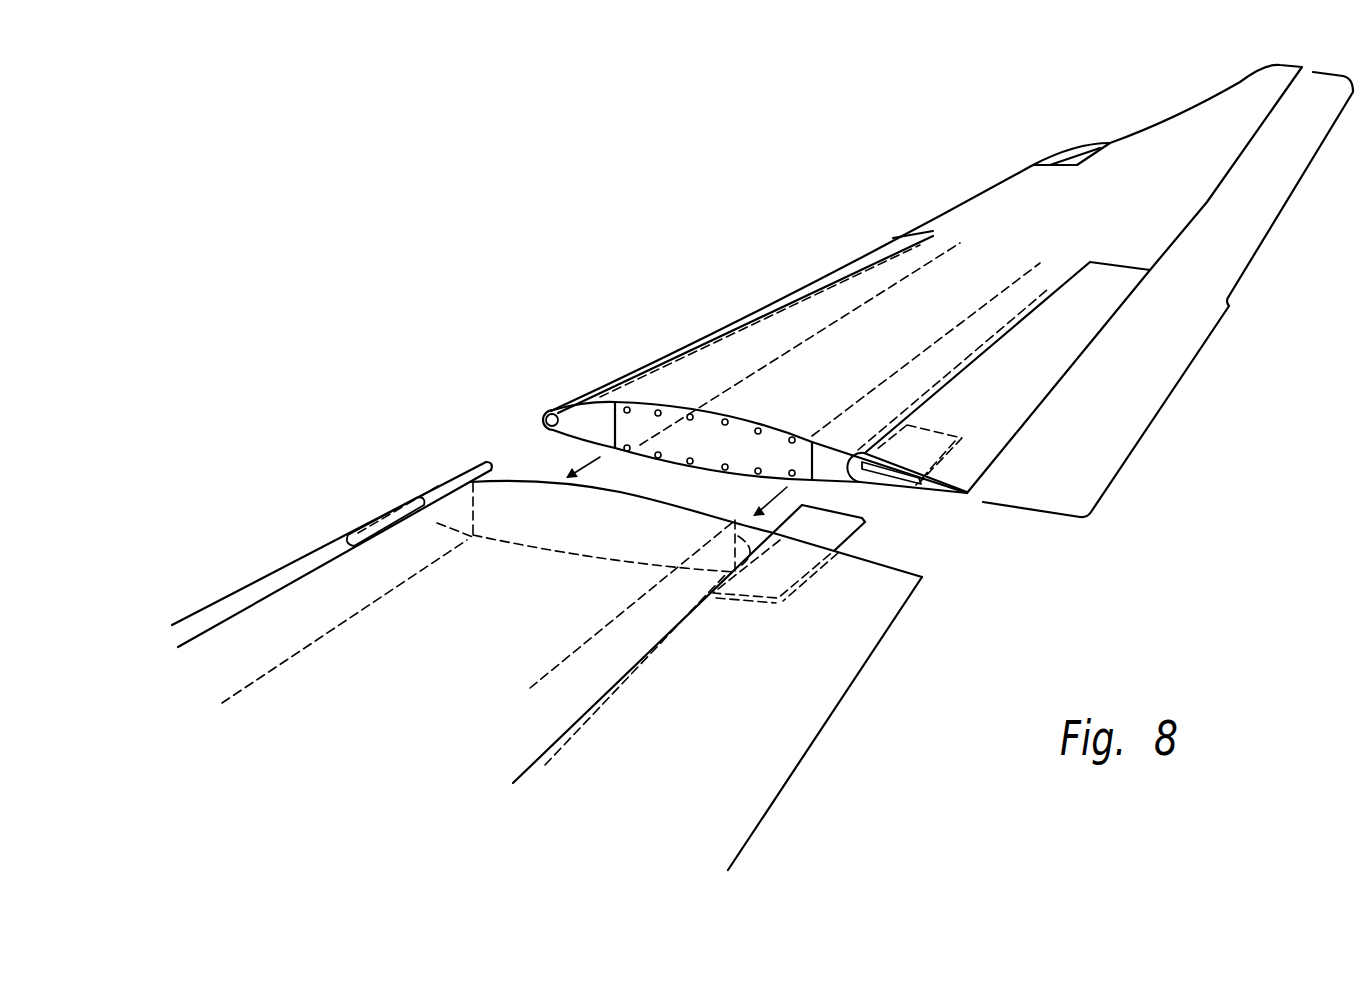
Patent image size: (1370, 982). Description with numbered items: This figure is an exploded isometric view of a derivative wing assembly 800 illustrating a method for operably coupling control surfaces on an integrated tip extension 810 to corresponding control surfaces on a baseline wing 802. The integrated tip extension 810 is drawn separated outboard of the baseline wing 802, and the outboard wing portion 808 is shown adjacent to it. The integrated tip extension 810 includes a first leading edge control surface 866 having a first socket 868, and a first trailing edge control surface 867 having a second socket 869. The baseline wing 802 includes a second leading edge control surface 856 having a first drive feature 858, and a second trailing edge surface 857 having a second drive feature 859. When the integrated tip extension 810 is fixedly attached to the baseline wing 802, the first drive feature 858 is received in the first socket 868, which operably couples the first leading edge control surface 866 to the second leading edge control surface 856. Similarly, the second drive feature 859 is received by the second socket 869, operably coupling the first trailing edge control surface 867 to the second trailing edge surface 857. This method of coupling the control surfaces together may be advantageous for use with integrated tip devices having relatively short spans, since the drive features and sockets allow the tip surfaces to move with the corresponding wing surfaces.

The derivative wing assembly 800 is at (397, 208).
The baseline wing 802 is at (500, 621).
The second wing 808 is at (880, 361).
The integrated tip extension 810 is at (1228, 308).
The second leading edge control surface 856 is at (267, 580).
The second trailing edge surface 857 is at (775, 742).
The first drive feature 858 is at (470, 473).
The second drive feature 859 is at (840, 528).
The first leading edge control surface 866 is at (635, 375).
The first trailing edge control surface 867 is at (1008, 415).
The first socket 868 is at (543, 420).
The second socket 869 is at (908, 480).